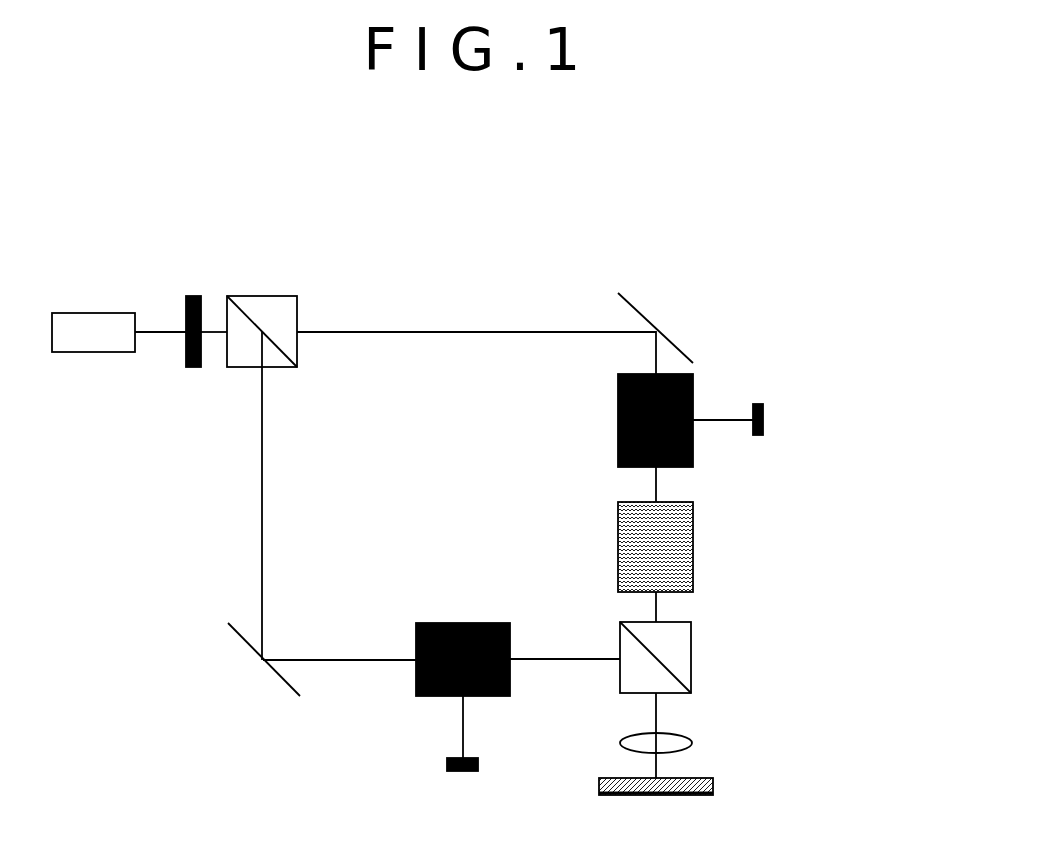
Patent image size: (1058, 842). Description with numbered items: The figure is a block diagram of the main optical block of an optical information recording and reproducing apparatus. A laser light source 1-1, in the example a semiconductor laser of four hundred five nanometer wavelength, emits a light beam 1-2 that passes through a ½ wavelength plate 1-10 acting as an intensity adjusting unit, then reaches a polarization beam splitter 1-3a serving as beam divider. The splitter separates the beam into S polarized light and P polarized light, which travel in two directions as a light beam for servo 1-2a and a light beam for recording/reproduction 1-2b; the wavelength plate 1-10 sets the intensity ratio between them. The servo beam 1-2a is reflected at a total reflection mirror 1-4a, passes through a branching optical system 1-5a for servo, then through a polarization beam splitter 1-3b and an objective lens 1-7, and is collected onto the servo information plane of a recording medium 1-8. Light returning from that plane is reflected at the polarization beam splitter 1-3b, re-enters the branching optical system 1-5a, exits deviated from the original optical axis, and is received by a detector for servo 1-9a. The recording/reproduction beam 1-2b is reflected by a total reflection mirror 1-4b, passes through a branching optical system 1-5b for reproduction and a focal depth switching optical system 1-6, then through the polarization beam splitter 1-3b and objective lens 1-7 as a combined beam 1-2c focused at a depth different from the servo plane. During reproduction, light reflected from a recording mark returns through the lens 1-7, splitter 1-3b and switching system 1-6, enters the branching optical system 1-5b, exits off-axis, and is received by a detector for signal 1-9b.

The laser light source 1-1 is at (93, 311).
The light beam 1-2 is at (158, 332).
The ½ wavelength plate 1-10 is at (193, 294).
The polarization beam splitter 1-3a is at (262, 296).
The light beam for recording/reproduction 1-2b is at (441, 330).
The light beam for servo 1-2a is at (262, 463).
The total reflection mirror 1-4b is at (645, 312).
The branching optical system 1-5b is at (615, 433).
The detector for signal 1-9b is at (763, 410).
The focal depth switching optical system 1-6 is at (693, 540).
The polarization beam splitter 1-3b is at (692, 655).
The combined beam 1-2c is at (656, 714).
The objective lens 1-7 is at (692, 743).
The recording medium 1-8 is at (713, 781).
The total reflection mirror 1-4a is at (245, 643).
The branching optical system 1-5a is at (460, 623).
The detector for servo 1-9a is at (445, 766).